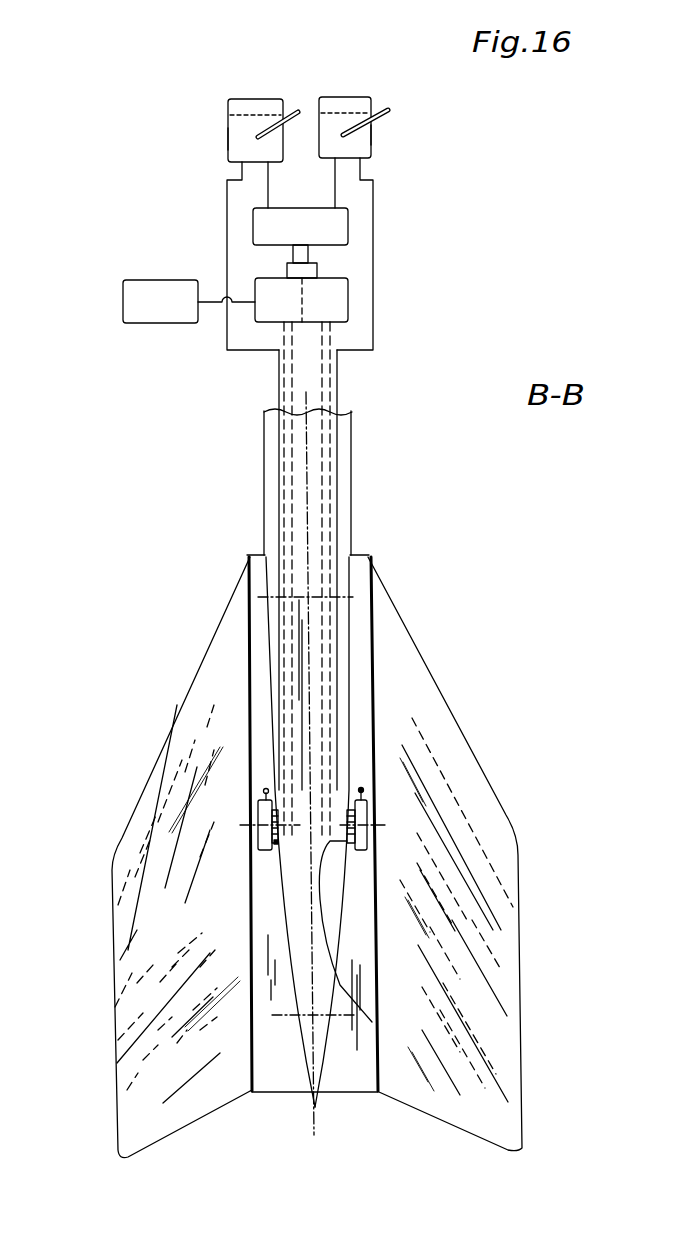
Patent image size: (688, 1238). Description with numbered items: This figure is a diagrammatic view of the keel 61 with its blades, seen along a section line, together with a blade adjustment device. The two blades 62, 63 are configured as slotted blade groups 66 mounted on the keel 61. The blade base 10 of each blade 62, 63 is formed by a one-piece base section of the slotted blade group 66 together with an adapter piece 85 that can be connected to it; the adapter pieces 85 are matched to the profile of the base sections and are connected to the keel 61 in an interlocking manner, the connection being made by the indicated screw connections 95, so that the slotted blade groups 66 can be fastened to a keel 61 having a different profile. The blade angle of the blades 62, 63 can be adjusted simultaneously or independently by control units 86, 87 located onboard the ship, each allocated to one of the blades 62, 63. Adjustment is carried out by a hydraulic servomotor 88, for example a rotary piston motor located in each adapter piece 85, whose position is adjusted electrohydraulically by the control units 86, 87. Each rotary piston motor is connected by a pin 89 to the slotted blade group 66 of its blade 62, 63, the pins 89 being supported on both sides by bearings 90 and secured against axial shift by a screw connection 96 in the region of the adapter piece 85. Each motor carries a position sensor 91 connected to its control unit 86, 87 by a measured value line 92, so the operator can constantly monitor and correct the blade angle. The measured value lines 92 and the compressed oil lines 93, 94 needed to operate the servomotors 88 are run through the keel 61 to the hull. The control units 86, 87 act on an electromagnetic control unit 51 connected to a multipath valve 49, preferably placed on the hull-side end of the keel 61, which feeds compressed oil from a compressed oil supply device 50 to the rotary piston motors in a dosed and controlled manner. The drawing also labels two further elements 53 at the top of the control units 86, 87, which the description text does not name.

The blade base 10 is at (376, 540).
The multipath valve 49 is at (338, 303).
The compressed oil supply device 50 is at (133, 280).
The electromagnetic control unit 51 is at (296, 208).
The sensor units 53 is at (240, 108).
The keel 61 is at (317, 1110).
The blade 62 is at (141, 648).
The blade 63 is at (451, 628).
The slotted blade group 66 is at (88, 987).
The adapter piece 85 is at (275, 1083).
The control unit 86 is at (228, 128).
The control unit 87 is at (372, 134).
The hydraulic servomotor 88 is at (258, 800).
The pin 89 is at (249, 856).
The bearing 90 is at (258, 828).
The position sensor 91 is at (266, 789).
The measured value line 92 is at (227, 226).
The compressed oil line 93 is at (285, 477).
The compressed oil line 94 is at (292, 521).
The screw connection 95 is at (275, 595).
The screw connection 96 is at (372, 1022).